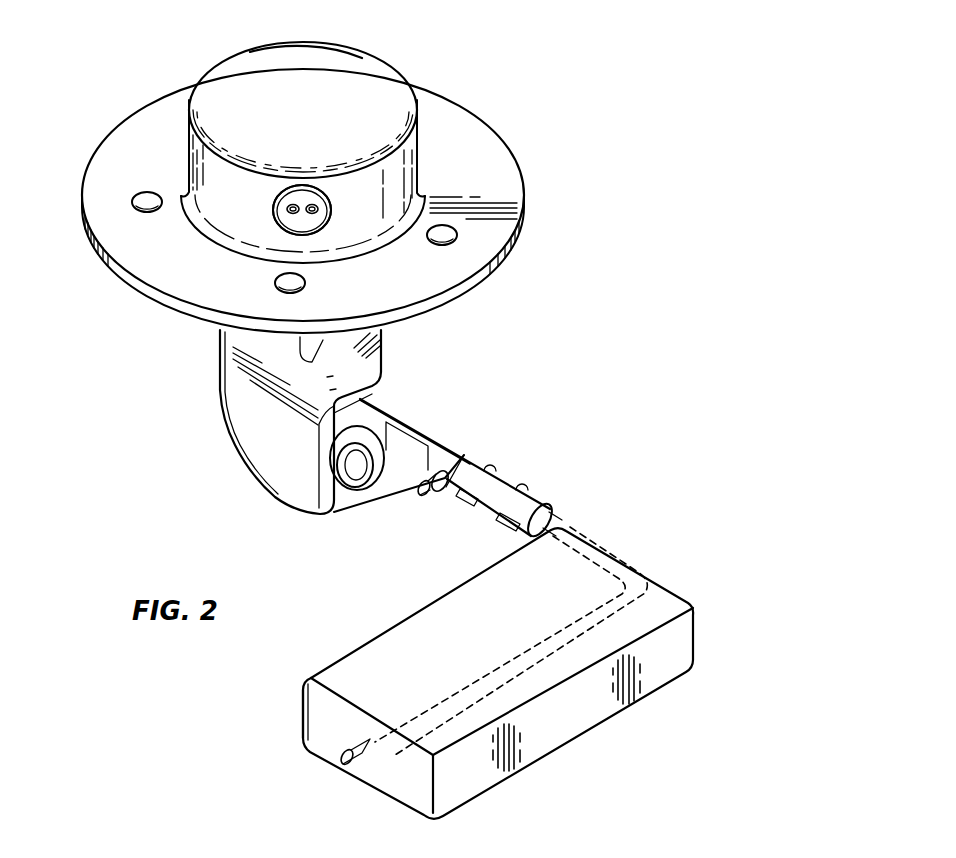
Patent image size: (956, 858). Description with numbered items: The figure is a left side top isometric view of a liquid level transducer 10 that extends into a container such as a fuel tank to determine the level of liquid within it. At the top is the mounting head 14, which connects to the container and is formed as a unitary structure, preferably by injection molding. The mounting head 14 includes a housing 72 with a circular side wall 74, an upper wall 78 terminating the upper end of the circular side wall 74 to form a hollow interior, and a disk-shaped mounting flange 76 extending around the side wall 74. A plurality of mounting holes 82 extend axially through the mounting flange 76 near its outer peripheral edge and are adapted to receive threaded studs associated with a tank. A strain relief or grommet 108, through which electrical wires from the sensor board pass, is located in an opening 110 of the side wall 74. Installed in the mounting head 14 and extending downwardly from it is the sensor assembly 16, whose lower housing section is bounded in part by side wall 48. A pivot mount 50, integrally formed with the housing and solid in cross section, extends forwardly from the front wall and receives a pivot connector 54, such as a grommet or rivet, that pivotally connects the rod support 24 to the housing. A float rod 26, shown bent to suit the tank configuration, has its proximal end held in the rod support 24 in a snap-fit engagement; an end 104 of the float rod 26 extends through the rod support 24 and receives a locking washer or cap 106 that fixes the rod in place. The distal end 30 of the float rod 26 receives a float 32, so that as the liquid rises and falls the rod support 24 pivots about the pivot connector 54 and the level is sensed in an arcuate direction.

The liquid level transducer 10 is at (600, 133).
The mounting head 14 is at (436, 84).
The sensor assembly 16 is at (410, 574).
The rod support 24 is at (447, 486).
The float rod 26 is at (498, 668).
The distal end 30 is at (476, 677).
The float 32 is at (568, 722).
The side wall 48 is at (237, 400).
The pivot mount 50 is at (366, 462).
The pivot connector 54 is at (340, 462).
The housing 72 is at (248, 53).
The circular side wall 74 is at (200, 170).
The mounting flange 76 is at (468, 125).
The upper wall 78 is at (362, 60).
The mounting holes 82 is at (137, 193).
The end of the float rod 104 is at (422, 488).
The locking washer or cap 106 is at (439, 492).
The strain relief or grommet 108 is at (298, 218).
The opening 110 is at (278, 200).